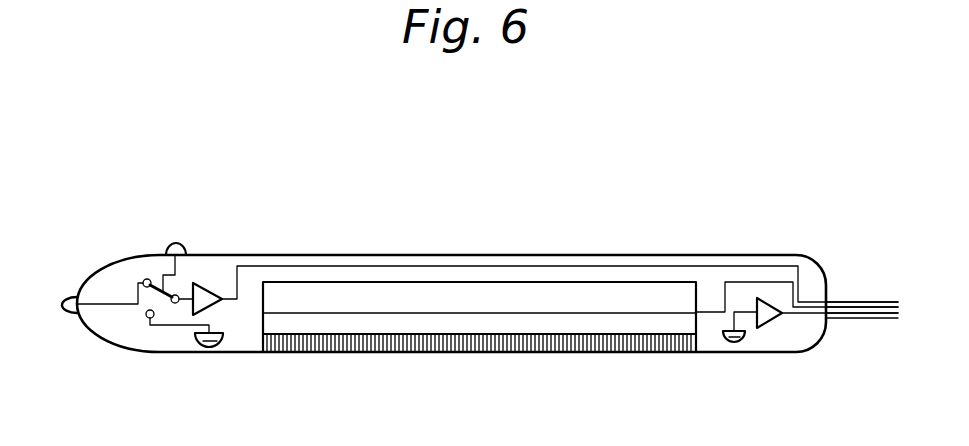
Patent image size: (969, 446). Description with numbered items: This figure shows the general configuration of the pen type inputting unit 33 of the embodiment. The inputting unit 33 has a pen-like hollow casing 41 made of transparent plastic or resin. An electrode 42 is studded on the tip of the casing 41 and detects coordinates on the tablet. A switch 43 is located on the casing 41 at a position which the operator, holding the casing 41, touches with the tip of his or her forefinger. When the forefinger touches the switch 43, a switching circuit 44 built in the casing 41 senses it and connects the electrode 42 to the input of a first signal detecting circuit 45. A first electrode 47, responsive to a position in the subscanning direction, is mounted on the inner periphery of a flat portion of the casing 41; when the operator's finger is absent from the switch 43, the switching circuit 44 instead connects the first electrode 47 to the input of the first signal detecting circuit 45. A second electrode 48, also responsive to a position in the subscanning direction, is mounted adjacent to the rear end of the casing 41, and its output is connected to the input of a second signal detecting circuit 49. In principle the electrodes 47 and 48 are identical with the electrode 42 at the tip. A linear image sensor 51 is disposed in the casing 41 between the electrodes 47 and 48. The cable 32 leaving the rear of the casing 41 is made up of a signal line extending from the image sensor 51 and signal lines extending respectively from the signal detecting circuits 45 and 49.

The cable 32 is at (853, 328).
The inputting unit 33 is at (451, 248).
The casing 41 is at (339, 255).
The electrode 42 is at (65, 297).
The switch 43 is at (174, 243).
The switching circuit 44 is at (156, 300).
The first signal detecting circuit 45 is at (204, 285).
The first electrode 47 is at (222, 337).
The second electrode 48 is at (727, 345).
The second signal detecting circuit 49 is at (767, 318).
The linear image sensor 51 is at (425, 282).